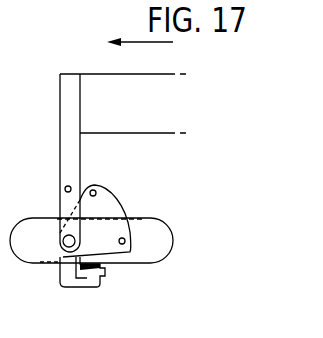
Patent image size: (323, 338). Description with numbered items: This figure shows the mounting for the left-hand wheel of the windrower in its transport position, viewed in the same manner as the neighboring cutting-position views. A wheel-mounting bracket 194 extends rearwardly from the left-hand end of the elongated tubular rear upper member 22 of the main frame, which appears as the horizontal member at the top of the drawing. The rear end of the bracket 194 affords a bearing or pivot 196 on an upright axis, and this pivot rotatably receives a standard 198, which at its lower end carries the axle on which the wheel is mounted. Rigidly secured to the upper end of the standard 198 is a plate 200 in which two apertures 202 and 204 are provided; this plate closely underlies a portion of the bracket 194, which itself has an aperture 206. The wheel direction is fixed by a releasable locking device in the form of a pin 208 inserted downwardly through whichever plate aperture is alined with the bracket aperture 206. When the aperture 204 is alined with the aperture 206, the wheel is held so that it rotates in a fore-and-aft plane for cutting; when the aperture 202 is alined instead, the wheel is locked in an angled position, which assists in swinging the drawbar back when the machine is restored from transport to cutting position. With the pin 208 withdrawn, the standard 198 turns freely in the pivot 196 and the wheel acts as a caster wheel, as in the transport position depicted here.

The tubular rear upper member 22 is at (115, 78).
The wheel-mounting bracket 194 is at (67, 111).
The bearing or pivot 196 is at (58, 261).
The standard 198 is at (88, 287).
The plate 200 is at (113, 208).
The aperture 202 is at (96, 190).
The aperture 204 is at (122, 244).
The aperture 206 is at (65, 191).
The pin 208 is at (27, 257).